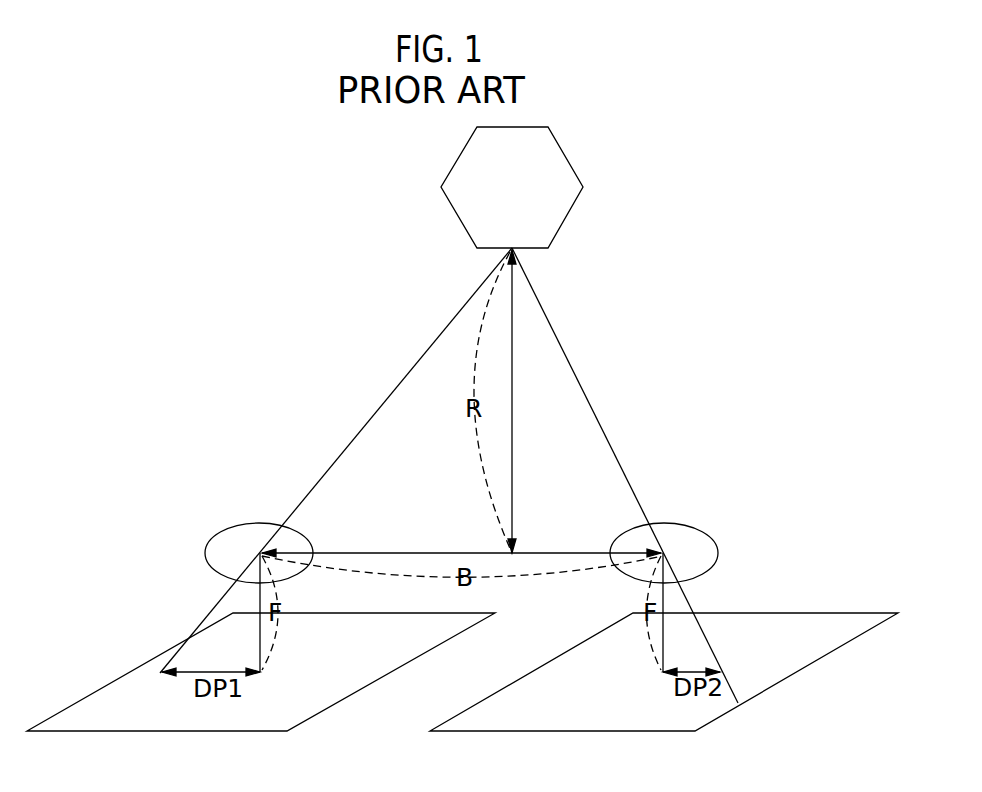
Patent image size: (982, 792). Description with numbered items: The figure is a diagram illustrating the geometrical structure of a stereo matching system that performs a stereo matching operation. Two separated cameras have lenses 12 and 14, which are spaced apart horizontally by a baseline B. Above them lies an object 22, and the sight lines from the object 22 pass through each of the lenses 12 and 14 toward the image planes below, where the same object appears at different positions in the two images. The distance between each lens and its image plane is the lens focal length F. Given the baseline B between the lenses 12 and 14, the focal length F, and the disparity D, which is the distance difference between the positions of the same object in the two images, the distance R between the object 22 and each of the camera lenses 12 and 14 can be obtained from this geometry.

The lens 12 is at (223, 528).
The lens 14 is at (695, 525).
The object 22 is at (567, 155).